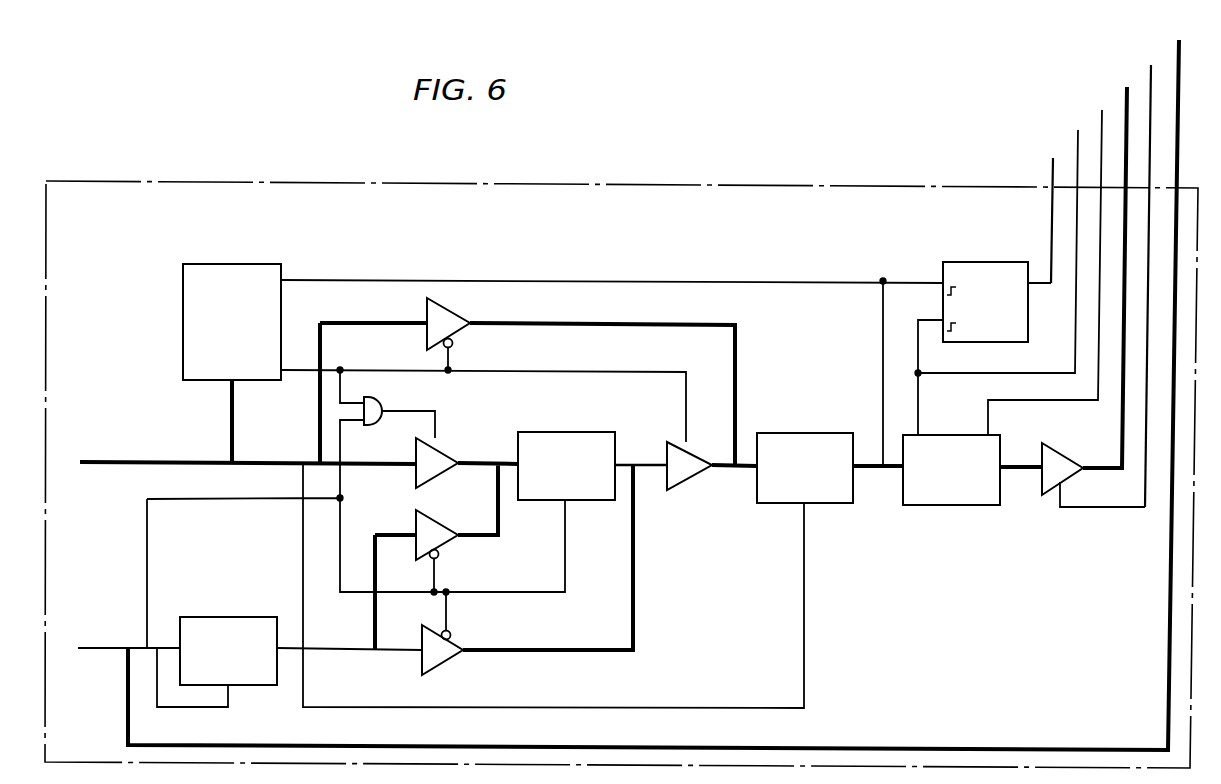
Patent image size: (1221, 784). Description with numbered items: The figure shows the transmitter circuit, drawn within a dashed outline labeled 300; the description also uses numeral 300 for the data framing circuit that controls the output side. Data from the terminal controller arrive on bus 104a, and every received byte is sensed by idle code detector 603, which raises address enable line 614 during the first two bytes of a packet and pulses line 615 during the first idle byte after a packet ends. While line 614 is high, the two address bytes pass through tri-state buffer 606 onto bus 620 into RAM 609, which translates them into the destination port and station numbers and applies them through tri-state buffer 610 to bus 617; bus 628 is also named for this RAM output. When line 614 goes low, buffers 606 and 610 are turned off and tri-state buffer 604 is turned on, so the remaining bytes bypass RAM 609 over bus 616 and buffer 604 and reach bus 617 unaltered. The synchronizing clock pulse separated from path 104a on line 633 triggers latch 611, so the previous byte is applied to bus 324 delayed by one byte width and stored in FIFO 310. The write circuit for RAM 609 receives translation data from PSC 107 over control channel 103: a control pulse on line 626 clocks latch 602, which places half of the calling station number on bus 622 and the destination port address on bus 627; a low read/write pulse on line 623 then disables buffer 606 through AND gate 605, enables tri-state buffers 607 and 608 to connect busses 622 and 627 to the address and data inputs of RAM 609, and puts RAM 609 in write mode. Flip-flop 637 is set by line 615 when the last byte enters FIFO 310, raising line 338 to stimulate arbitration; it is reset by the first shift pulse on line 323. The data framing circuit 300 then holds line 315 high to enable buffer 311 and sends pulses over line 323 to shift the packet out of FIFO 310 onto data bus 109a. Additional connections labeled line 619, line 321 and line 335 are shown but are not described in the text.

The data framing circuit 300 is at (141, 180).
The idle code detector 603 is at (362, 264).
The line 615 is at (534, 279).
The bus 616 is at (360, 322).
The tri-state buffer 604 is at (463, 319).
The bus 617 is at (636, 322).
The address enable line 614 is at (478, 372).
The AND gate 605 is at (381, 398).
The line 619 is at (440, 424).
The tri-state buffer 606 is at (415, 453).
The bus 620 is at (474, 461).
The RAM 609 is at (560, 432).
The bus 622 is at (398, 527).
The tri-state buffer 607 is at (433, 521).
The line 623 is at (145, 511).
The bus 104a is at (140, 462).
The control channel 103 is at (112, 645).
The latch 602 is at (245, 616).
The line 626 is at (192, 709).
The bus 627 is at (392, 652).
The tri-state buffer 608 is at (461, 642).
The bus 628 is at (636, 626).
The line 633 is at (806, 676).
The tri-state buffer 610 is at (692, 482).
The latch 611 is at (813, 432).
The bus 324 is at (868, 470).
The flip-flop 637 is at (988, 261).
The line 323 is at (1052, 373).
The line 321 is at (987, 416).
The FIFO 310 is at (943, 507).
The tri-state buffer 311 is at (1058, 452).
The line 315 is at (1095, 512).
The PSC 107 is at (1176, 44).
The enable line 335 is at (1148, 72).
The data bus 109a is at (1124, 95).
The line 338 is at (1050, 172).